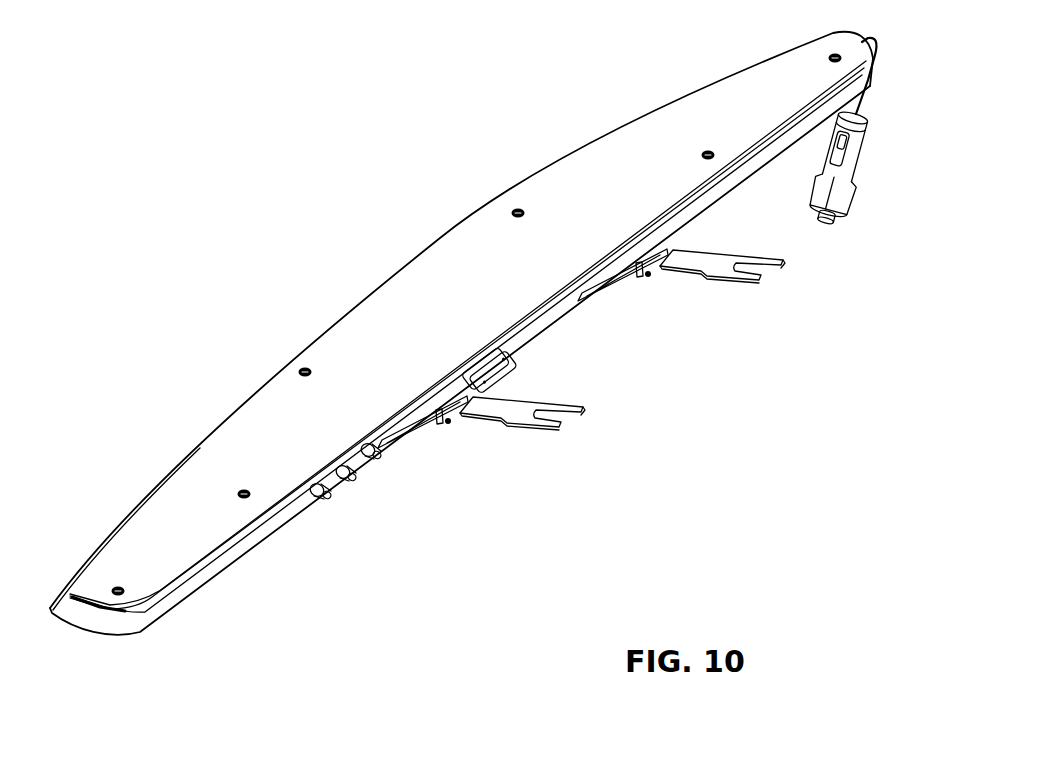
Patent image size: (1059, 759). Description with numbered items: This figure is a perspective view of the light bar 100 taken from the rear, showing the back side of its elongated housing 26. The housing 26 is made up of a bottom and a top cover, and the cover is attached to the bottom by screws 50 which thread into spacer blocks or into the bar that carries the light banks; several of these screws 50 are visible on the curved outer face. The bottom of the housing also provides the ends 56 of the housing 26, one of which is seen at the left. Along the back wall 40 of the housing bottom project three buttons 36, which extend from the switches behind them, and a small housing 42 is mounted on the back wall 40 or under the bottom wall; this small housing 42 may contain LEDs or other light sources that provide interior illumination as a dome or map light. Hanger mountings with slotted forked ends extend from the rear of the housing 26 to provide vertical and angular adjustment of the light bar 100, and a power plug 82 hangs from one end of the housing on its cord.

The light bar 100 is at (412, 248).
The housing 26 is at (120, 553).
The screws 50 is at (242, 492).
The back wall 40 is at (263, 525).
The ends 56 is at (82, 622).
The small housing 42 is at (503, 373).
The buttons 36 is at (380, 458).
The power plug 82 is at (863, 155).